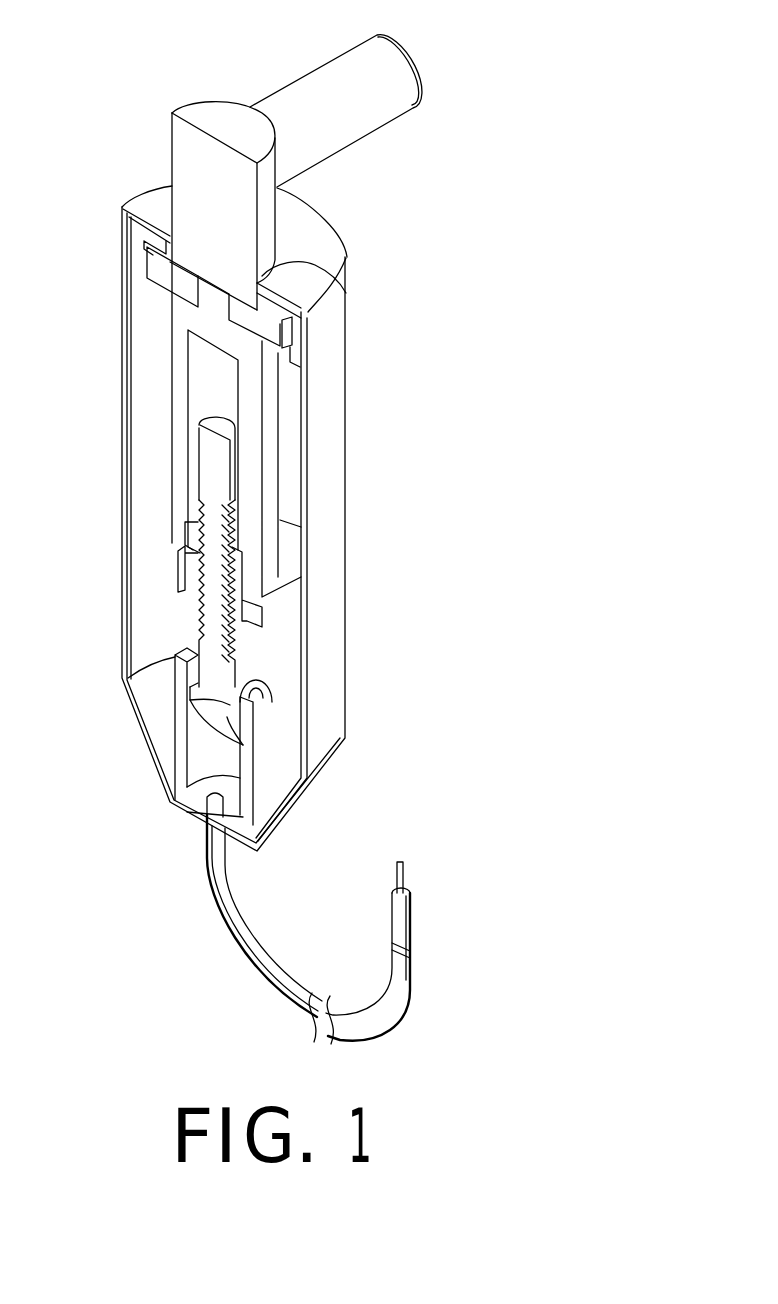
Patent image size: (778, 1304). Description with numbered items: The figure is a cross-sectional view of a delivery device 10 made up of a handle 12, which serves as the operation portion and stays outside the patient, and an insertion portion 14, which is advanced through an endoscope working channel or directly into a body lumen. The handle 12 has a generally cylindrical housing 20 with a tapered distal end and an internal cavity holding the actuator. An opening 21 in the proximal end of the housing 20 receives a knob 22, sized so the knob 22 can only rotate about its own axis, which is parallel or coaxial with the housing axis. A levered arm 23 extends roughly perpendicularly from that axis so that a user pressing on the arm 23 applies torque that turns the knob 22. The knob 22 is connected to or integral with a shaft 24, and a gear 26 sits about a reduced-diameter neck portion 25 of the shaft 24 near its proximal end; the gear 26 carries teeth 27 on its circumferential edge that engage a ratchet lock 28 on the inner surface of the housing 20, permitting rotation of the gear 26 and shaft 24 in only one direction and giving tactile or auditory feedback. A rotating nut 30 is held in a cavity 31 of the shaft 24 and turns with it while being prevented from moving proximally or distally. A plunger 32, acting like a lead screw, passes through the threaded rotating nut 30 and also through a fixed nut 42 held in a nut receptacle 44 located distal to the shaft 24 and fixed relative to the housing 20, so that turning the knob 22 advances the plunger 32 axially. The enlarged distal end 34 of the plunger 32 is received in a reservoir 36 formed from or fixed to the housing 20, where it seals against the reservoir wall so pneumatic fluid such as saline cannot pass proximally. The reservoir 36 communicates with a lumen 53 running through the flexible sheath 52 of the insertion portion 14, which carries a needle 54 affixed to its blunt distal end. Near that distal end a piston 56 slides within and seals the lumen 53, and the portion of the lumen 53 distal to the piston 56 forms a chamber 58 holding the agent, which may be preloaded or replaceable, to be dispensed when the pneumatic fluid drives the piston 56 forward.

The delivery device 10 is at (404, 219).
The handle 12 is at (404, 505).
The insertion portion 14 is at (460, 1010).
The housing 20 is at (345, 408).
The opening 21 is at (348, 290).
The knob 22 is at (190, 157).
The levered arm 23 is at (323, 75).
The shaft 24 is at (177, 460).
The neck portion 25 is at (212, 300).
The gear 26 is at (158, 270).
The teeth 27 is at (140, 233).
The ratchet lock 28 is at (290, 352).
The rotating nut 30 is at (195, 535).
The cavity 31 is at (200, 373).
The plunger 32 is at (218, 637).
The distal end 34 is at (243, 746).
The reservoir 36 is at (208, 745).
The fixed nut 42 is at (185, 578).
The nut receptacle 44 is at (255, 612).
The sheath 52 is at (220, 930).
The lumen 53 is at (355, 1030).
The needle 54 is at (399, 863).
The piston 56 is at (392, 932).
The chamber 58 is at (400, 920).